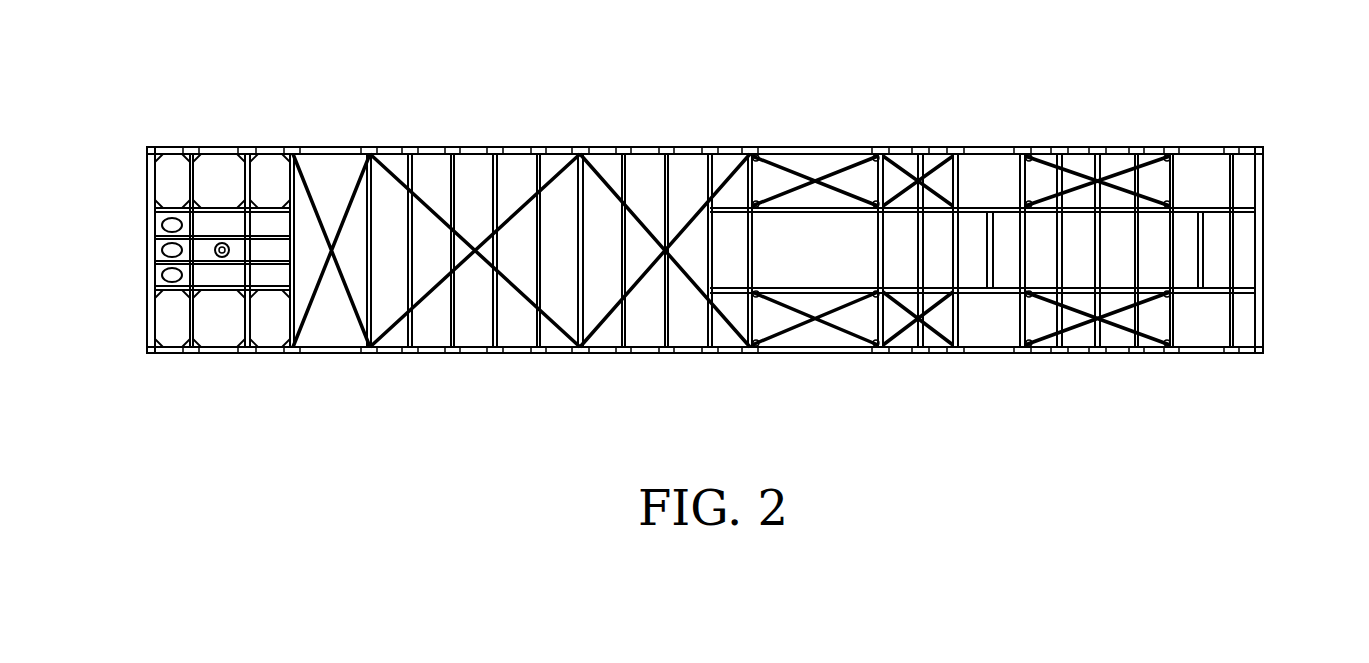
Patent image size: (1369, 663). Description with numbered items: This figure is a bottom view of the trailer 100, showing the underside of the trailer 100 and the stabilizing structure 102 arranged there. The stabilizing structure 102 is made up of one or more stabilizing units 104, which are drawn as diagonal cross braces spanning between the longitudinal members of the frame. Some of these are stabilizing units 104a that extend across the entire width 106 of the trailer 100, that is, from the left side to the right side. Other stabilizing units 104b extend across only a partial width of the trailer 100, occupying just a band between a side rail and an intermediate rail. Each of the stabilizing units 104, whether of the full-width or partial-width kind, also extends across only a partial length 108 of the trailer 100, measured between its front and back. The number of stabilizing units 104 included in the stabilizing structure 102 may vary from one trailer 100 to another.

The trailer 100 is at (709, 200).
The stabilizing structure 102 is at (1092, 126).
The stabilizing units 104 is at (417, 190).
The stabilizing units 104a is at (303, 178).
The stabilizing units 104b is at (808, 168).
The width 106 is at (147, 223).
The length 108 is at (657, 148).